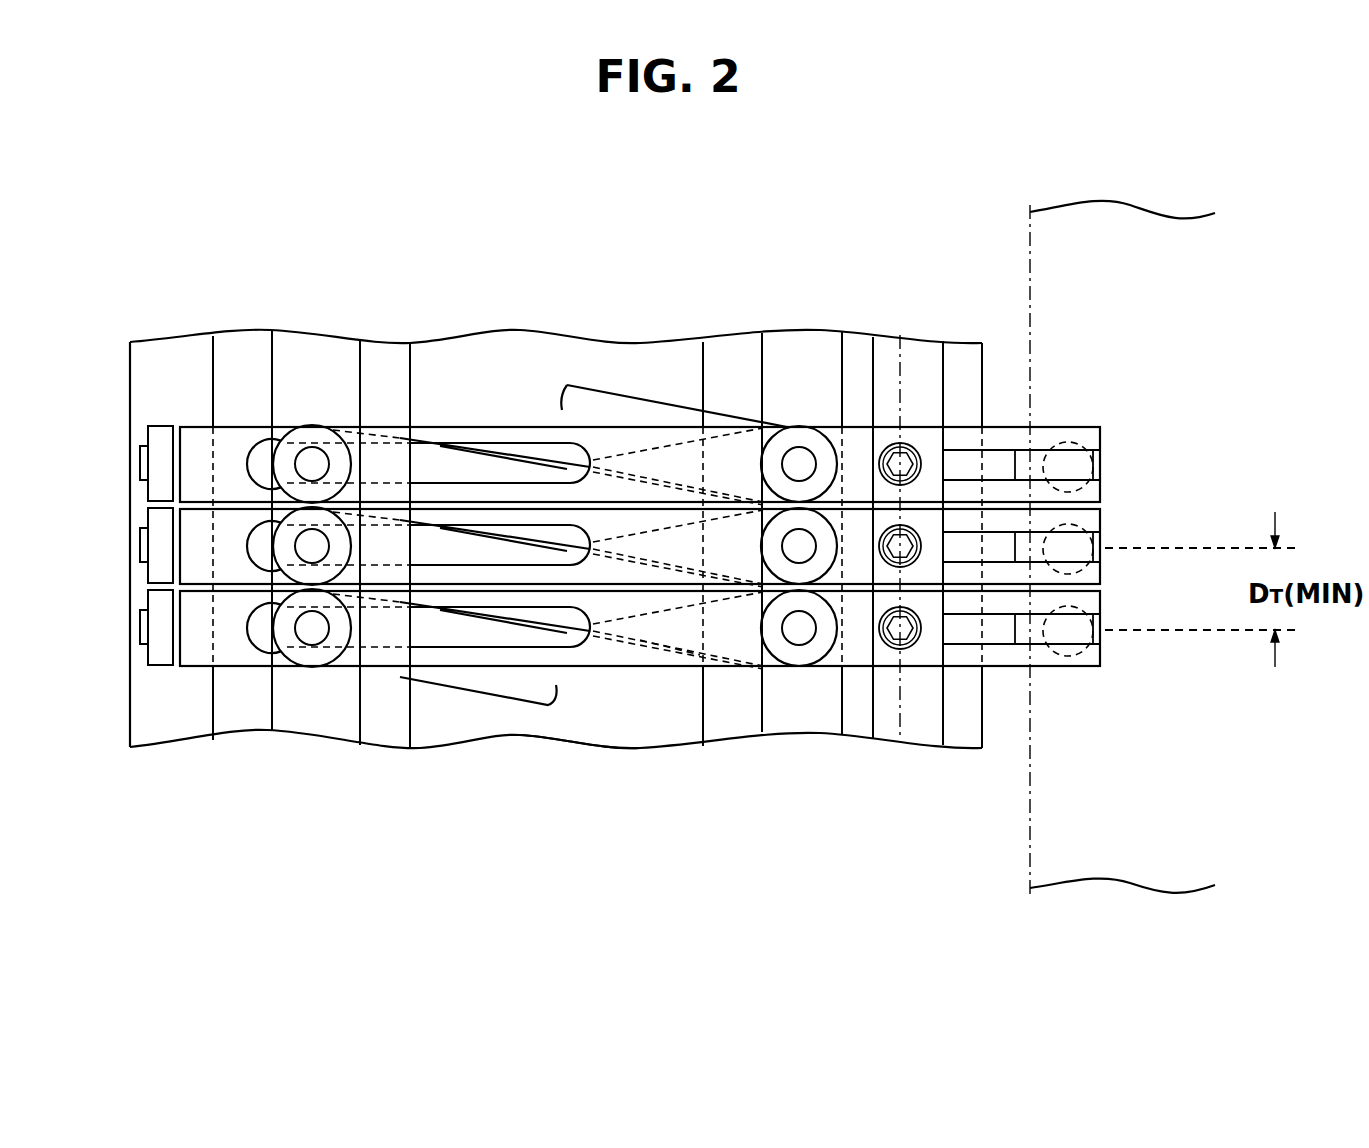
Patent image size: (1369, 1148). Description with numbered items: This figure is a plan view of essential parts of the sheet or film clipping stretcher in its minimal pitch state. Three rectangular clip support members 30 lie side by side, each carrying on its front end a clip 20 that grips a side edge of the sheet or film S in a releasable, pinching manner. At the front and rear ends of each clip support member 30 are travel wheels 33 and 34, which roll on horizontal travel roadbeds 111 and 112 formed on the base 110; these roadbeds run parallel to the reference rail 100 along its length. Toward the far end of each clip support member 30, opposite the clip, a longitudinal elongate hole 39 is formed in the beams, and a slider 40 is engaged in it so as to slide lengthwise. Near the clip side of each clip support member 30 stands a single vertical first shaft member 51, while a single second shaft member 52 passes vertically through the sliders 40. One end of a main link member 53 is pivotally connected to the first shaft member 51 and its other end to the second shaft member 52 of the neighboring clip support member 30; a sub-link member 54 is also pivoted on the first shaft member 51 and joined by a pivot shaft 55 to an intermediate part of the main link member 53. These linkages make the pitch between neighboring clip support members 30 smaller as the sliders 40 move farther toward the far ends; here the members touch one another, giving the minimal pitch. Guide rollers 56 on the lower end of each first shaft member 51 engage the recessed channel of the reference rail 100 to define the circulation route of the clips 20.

The clip 20 is at (1105, 465).
The clip support member 30 is at (853, 440).
The travel wheel 33 is at (140, 628).
The travel wheel 34 is at (148, 547).
The elongate hole 39 is at (470, 442).
The slider 40 is at (268, 440).
The first shaft member 51 is at (800, 455).
The second shaft member 52 is at (312, 455).
The main link member 53 is at (632, 468).
The sub-link member 54 is at (657, 655).
The pivot shaft 55 is at (583, 458).
The guide roller 56 is at (735, 667).
The reference rail 100 is at (812, 722).
The base 110 is at (580, 750).
The travel roadbed 111 is at (953, 728).
The travel roadbed 112 is at (172, 745).
The sheet or film S is at (1108, 213).